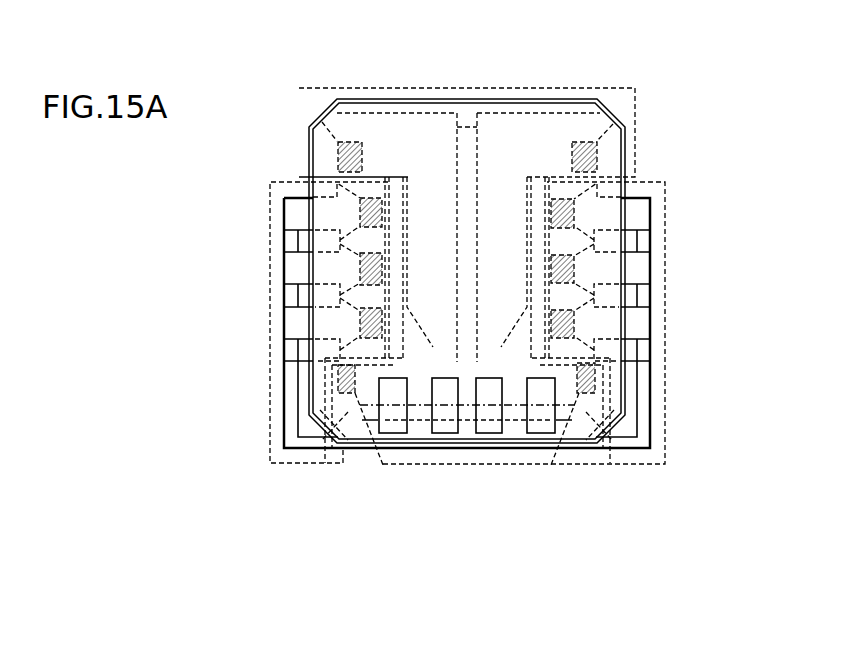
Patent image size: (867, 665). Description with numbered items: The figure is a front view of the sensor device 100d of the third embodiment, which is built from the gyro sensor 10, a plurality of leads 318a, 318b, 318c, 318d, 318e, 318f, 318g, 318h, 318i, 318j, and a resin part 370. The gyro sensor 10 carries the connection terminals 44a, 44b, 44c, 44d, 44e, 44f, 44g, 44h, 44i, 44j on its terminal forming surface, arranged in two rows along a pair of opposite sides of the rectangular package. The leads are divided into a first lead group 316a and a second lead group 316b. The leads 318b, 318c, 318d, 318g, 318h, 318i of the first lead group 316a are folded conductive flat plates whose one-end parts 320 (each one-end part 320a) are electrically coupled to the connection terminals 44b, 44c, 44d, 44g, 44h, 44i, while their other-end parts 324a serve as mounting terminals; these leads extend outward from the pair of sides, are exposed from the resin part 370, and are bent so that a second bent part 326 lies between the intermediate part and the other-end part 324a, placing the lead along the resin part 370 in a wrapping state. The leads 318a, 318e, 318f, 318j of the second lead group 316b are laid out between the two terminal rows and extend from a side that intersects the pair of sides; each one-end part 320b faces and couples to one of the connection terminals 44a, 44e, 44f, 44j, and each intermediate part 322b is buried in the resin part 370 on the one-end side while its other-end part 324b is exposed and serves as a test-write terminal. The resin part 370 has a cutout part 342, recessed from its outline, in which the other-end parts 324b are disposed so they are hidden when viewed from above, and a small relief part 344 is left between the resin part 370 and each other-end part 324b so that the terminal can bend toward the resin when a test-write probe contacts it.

The gyro sensor 10 is at (463, 122).
The sensor device 100d is at (517, 60).
The resin part 370 is at (470, 112).
The one-end part 320 is at (583, 113).
The one-end part 320a is at (633, 192).
The one-end part 320b is at (325, 398).
The first lead group 316a is at (668, 432).
The second lead group 316b is at (580, 88).
The intermediate part 322b is at (507, 185).
The other-end part 324a is at (317, 440).
The other-end part 324b is at (484, 447).
The second bent part 326 is at (293, 442).
The cutout part 342 is at (466, 400).
The relief part 344 is at (418, 424).
The connection terminal 44a is at (352, 150).
The connection terminal 44b is at (360, 212).
The connection terminal 44c is at (360, 268).
The connection terminal 44d is at (360, 325).
The connection terminal 44e is at (340, 388).
The connection terminal 44f is at (598, 160).
The connection terminal 44g is at (574, 213).
The connection terminal 44h is at (574, 268).
The connection terminal 44i is at (574, 322).
The connection terminal 44j is at (597, 378).
The lead 318a is at (444, 432).
The lead 318b is at (286, 218).
The lead 318c is at (286, 279).
The lead 318d is at (286, 338).
The lead 318e is at (389, 432).
The lead 318f is at (491, 432).
The lead 318g is at (649, 218).
The lead 318h is at (649, 272).
The lead 318i is at (649, 326).
The lead 318j is at (539, 432).